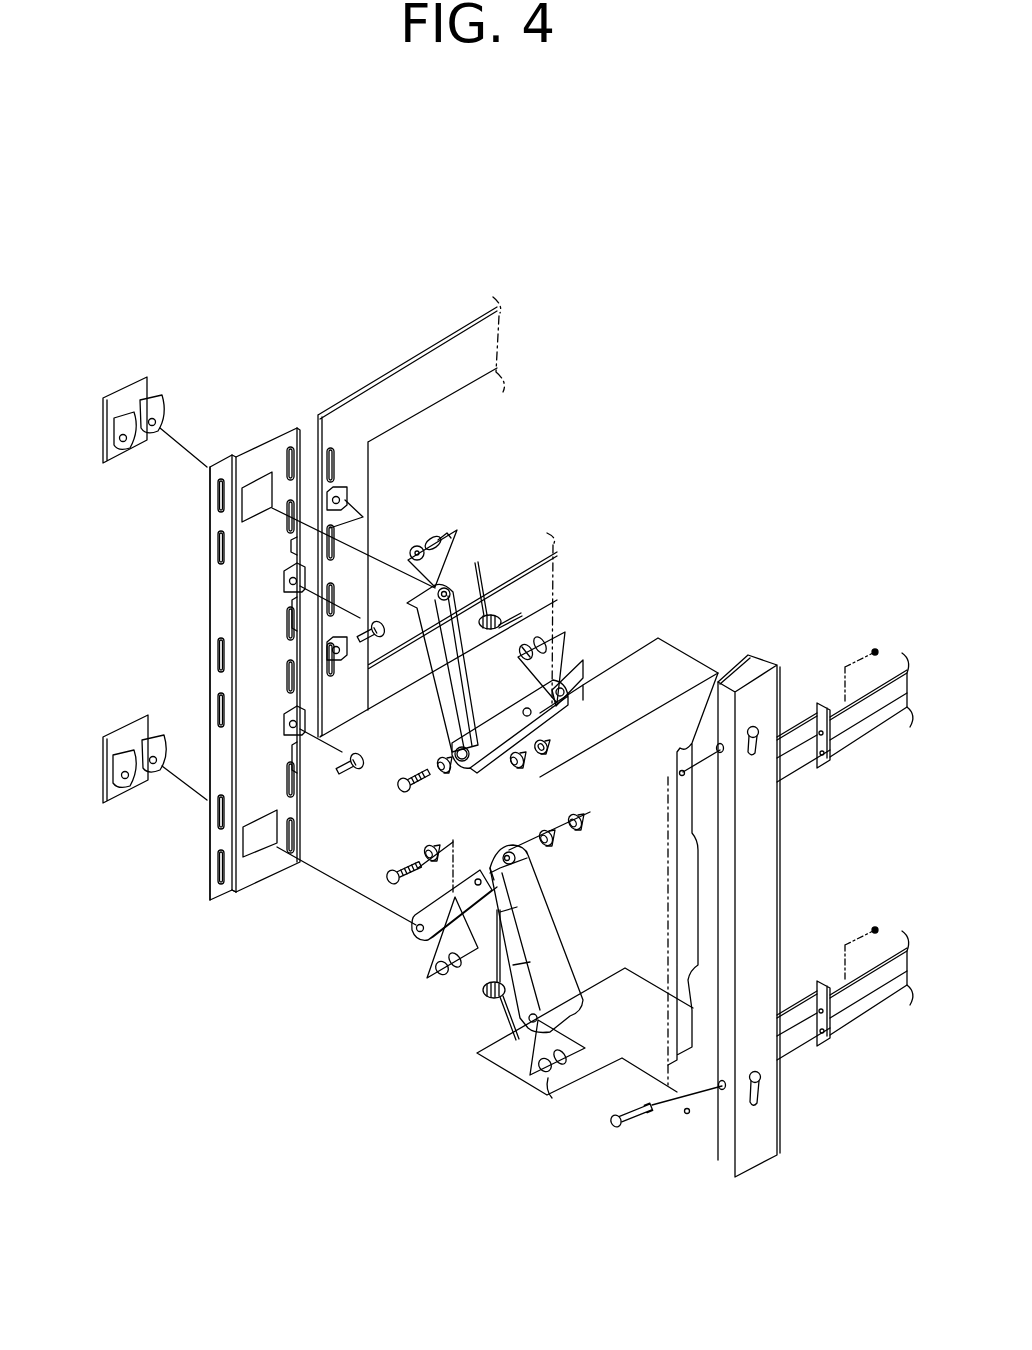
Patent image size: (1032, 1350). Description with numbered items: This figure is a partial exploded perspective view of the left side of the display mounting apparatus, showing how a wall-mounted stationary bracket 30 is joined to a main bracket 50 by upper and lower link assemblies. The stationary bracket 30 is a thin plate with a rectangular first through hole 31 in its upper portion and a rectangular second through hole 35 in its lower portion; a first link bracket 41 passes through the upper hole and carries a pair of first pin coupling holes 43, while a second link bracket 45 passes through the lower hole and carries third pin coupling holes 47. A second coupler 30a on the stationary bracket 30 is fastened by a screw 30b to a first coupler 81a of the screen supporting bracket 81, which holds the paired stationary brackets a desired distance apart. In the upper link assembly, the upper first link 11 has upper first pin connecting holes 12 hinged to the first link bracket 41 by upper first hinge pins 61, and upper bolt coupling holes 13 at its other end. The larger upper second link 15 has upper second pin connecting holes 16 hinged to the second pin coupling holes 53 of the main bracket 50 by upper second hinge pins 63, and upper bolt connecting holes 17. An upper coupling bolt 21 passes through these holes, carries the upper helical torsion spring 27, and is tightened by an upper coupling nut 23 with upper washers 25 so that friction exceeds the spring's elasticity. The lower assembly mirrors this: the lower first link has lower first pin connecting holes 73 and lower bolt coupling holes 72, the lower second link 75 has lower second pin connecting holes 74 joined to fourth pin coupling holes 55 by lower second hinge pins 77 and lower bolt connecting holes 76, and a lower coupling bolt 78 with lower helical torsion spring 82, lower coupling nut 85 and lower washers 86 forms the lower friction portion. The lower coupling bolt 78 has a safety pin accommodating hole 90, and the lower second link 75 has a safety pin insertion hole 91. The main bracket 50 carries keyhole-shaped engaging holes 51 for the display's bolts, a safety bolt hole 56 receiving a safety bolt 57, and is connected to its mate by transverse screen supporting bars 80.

The upper first link 11 is at (437, 688).
The upper first pin connecting hole 12 is at (409, 602).
The upper bolt coupling hole 13 is at (454, 753).
The upper second link 15 is at (478, 770).
The upper second pin connecting hole 16 is at (583, 664).
The upper bolt connecting hole 17 is at (455, 752).
The upper coupling bolt 21 is at (415, 792).
The upper coupling nut 23 is at (550, 745).
The upper washers 25 is at (445, 775).
The upper helical torsion spring 27 is at (487, 568).
The stationary bracket 30 is at (232, 582).
The second coupler 30a is at (285, 583).
The screw 30b is at (385, 640).
The first through hole 31 is at (256, 478).
The second through hole 35 is at (248, 846).
The first link bracket 41 is at (92, 418).
The first pin coupling hole 43 is at (148, 423).
The second link bracket 45 is at (116, 769).
The third pin coupling hole 47 is at (150, 765).
The main bracket 50 is at (765, 883).
The engaging hole 51 is at (776, 717).
The second pin coupling hole 53 is at (680, 773).
The fourth pin coupling hole 55 is at (684, 1114).
The safety bolt hole 56 is at (724, 753).
The safety bolt 57 is at (612, 1130).
The upper first hinge pin 61 is at (424, 538).
The upper second hinge pin 63 is at (542, 628).
The lower bolt coupling hole 72 is at (530, 868).
The lower first pin connecting hole 73 is at (416, 930).
The lower second pin connecting hole 74 is at (528, 1035).
The lower second link 75 is at (550, 934).
The lower bolt connecting hole 76 is at (490, 850).
The lower second hinge pin 77 is at (550, 1080).
The lower coupling bolt 78 is at (394, 870).
The screen supporting bar 80 is at (850, 732).
The screen supporting bracket 81 is at (403, 380).
The first coupler 81a is at (347, 498).
The lower helical torsion spring 82 is at (484, 993).
The lower coupling nut 85 is at (583, 818).
The lower washers 86 is at (427, 864).
The safety pin accommodating hole 90 is at (380, 885).
The safety pin insertion hole 91 is at (460, 868).